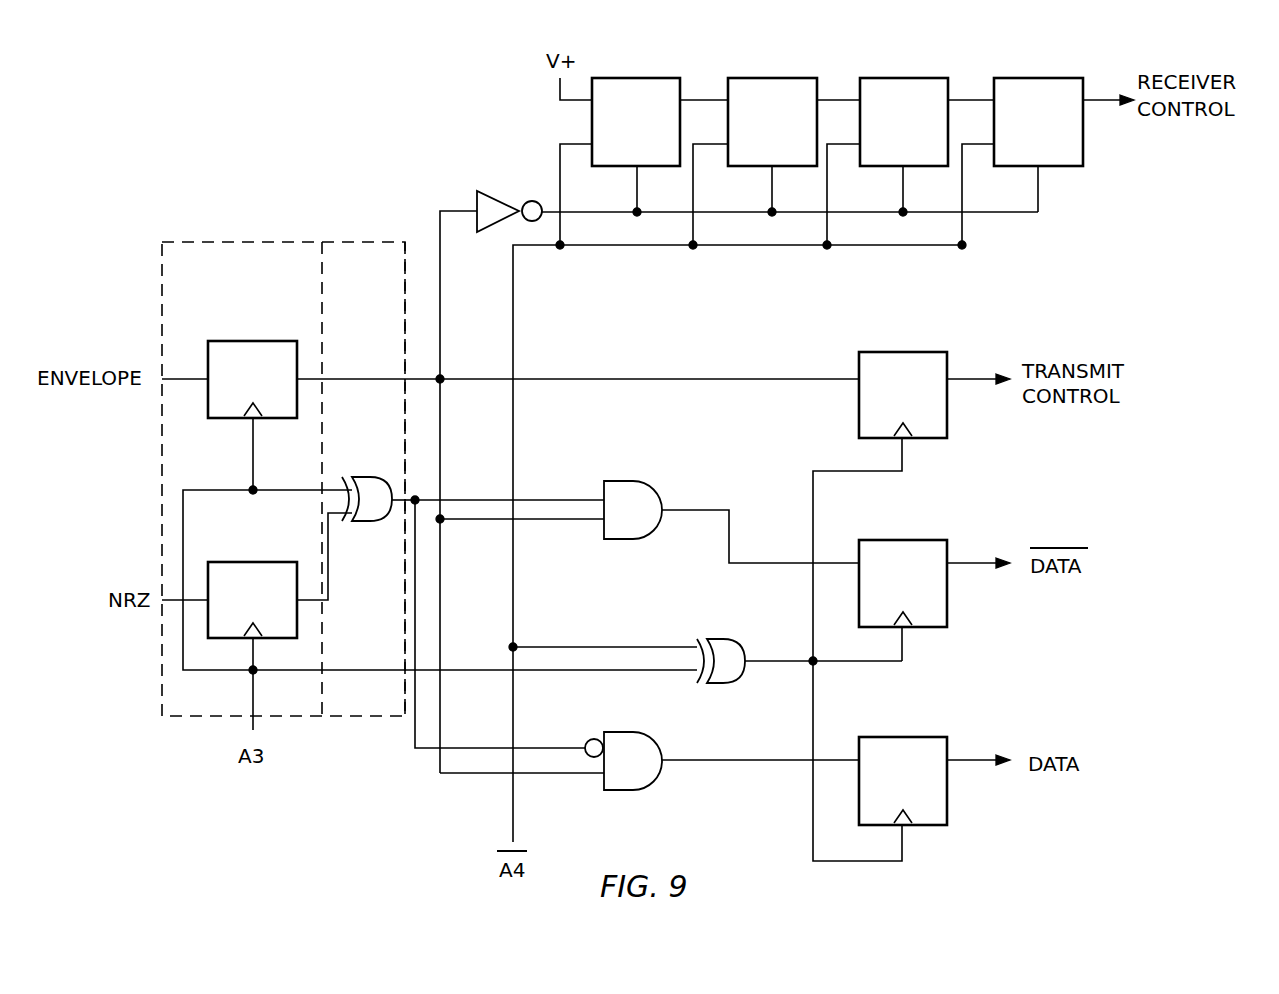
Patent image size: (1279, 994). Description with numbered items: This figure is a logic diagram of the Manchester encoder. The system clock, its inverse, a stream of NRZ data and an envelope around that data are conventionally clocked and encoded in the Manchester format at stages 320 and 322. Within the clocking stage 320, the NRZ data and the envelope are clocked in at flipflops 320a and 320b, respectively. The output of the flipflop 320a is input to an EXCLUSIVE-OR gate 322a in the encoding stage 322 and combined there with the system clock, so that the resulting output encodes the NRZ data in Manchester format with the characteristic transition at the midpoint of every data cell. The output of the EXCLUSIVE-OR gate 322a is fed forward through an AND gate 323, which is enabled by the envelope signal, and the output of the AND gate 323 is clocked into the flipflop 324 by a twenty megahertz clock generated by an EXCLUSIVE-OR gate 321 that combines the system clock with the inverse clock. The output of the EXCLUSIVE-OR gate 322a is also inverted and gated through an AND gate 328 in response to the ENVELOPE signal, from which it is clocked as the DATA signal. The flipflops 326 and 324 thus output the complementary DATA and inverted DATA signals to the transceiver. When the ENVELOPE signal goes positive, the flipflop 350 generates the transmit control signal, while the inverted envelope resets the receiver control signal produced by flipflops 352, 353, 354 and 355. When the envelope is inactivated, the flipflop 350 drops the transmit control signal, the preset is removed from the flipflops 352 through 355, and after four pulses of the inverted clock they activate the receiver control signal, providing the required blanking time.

The clocking stage 320 is at (234, 240).
The flipflop 320a is at (255, 562).
The flipflop 320b is at (255, 341).
The Manchester encoding stage 322 is at (382, 240).
The EXCLUSIVE-OR gate 322a is at (371, 522).
The EXCLUSIVE-OR gate 321 is at (727, 684).
The AND gate 323 is at (632, 481).
The flipflop 324 is at (904, 540).
The flipflop 326 is at (904, 737).
The AND gate 328 is at (632, 732).
The flipflop 350 is at (904, 352).
The flipflop 352 is at (641, 78).
The flipflop 353 is at (769, 78).
The flipflop 354 is at (904, 78).
The flipflop 355 is at (1039, 78).